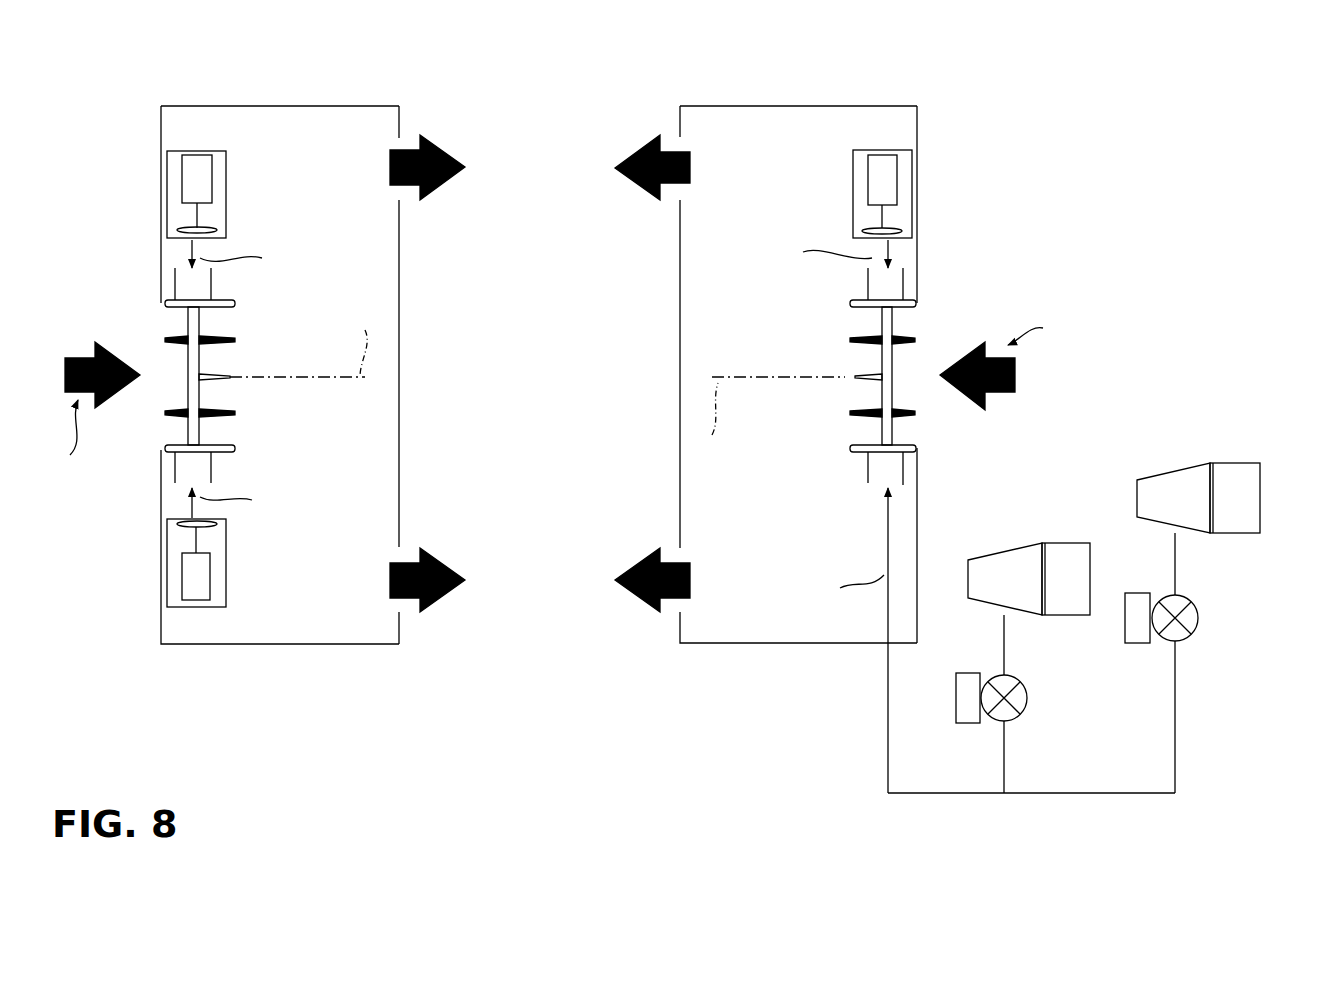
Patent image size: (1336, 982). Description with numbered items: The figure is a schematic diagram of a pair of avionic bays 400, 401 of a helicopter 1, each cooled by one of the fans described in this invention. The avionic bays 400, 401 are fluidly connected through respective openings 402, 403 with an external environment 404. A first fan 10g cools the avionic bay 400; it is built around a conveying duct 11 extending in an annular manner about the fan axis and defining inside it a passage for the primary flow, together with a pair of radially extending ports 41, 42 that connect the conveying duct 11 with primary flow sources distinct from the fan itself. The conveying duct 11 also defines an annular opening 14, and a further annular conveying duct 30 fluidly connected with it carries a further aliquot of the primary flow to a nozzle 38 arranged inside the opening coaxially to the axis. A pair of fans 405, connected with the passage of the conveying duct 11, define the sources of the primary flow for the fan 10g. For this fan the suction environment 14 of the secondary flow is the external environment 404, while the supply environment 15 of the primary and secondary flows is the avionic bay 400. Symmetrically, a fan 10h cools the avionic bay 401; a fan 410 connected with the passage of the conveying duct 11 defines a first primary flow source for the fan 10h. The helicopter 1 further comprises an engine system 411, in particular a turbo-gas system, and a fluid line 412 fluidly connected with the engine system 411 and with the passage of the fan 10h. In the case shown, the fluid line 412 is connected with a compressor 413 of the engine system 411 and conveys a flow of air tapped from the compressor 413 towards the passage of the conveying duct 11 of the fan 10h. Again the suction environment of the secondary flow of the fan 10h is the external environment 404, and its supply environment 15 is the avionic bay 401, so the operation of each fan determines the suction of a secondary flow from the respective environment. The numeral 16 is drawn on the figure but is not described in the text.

The helicopter 1 is at (1097, 155).
The first fan 10g is at (128, 318).
The fan 10h is at (825, 335).
The conveying duct 11 is at (250, 297).
The annular opening / suction environment 14 is at (78, 140).
The suction environment / supply environment 15 is at (163, 470).
The housing wall 16 is at (292, 108).
The further annular conveying duct 30 is at (235, 418).
The nozzle 38 is at (233, 375).
The port 41 is at (185, 280).
The port 42 is at (190, 488).
The avionic bay 400 is at (185, 88).
The avionic bay 401 is at (836, 98).
The opening 402 is at (404, 135).
The opening 403 is at (672, 138).
The external environment 404 is at (538, 150).
The fans 405 is at (220, 140).
The fan 410 is at (848, 190).
The engine system 411 is at (1270, 485).
The fluid line 412 is at (886, 728).
The compressor 413 is at (1008, 560).